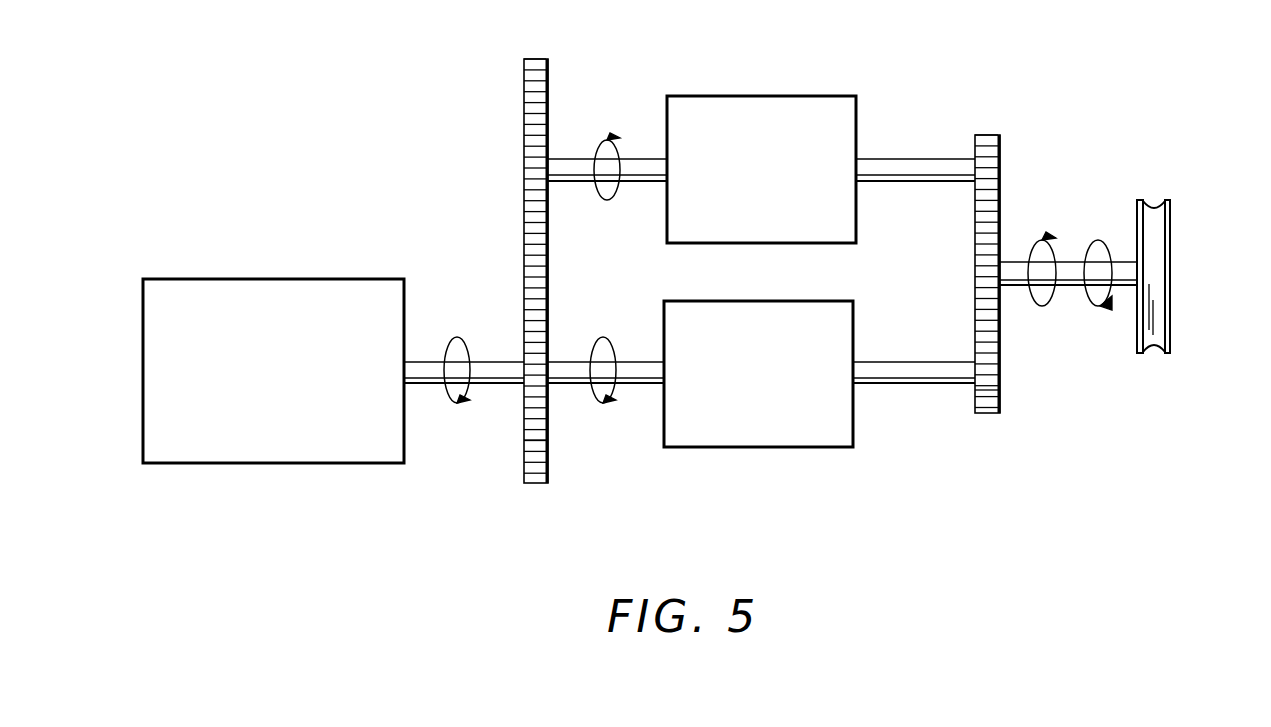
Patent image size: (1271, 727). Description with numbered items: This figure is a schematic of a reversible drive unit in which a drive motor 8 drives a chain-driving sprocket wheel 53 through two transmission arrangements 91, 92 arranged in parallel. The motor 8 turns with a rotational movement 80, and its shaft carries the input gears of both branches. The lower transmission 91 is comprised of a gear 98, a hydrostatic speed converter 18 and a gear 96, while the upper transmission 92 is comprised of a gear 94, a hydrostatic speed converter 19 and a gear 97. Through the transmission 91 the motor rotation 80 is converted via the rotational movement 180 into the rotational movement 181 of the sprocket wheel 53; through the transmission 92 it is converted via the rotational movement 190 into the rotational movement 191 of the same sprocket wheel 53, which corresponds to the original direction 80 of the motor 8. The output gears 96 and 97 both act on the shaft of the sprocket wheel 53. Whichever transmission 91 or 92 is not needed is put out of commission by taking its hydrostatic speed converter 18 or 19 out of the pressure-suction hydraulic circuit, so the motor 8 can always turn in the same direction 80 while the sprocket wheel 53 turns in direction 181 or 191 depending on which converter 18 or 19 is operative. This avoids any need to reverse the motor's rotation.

The drive motor 8 is at (243, 288).
The hydrostatic speed converter 18 is at (773, 437).
The hydrostatic speed converter 19 is at (763, 107).
The chain-driving sprocket wheel 53 is at (1156, 232).
The rotational movement of the motor 80 is at (457, 337).
The transmission arrangement 91 is at (622, 452).
The transmission arrangement 92 is at (630, 88).
The gear 94 is at (528, 93).
The gear 96 is at (990, 388).
The gear 97 is at (992, 150).
The gear 98 is at (527, 441).
The rotational movement 180 is at (603, 337).
The rotational movement of the sprocket wheel 181 is at (1042, 306).
The rotational movement 190 is at (607, 200).
The rotational movement of the sprocket wheel 191 is at (1096, 240).